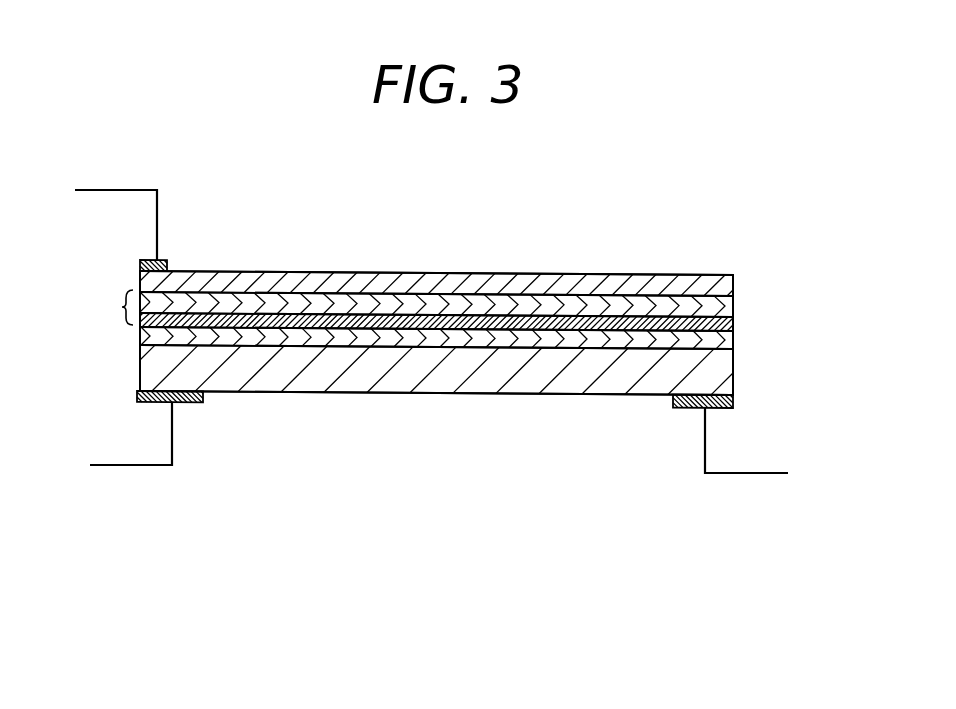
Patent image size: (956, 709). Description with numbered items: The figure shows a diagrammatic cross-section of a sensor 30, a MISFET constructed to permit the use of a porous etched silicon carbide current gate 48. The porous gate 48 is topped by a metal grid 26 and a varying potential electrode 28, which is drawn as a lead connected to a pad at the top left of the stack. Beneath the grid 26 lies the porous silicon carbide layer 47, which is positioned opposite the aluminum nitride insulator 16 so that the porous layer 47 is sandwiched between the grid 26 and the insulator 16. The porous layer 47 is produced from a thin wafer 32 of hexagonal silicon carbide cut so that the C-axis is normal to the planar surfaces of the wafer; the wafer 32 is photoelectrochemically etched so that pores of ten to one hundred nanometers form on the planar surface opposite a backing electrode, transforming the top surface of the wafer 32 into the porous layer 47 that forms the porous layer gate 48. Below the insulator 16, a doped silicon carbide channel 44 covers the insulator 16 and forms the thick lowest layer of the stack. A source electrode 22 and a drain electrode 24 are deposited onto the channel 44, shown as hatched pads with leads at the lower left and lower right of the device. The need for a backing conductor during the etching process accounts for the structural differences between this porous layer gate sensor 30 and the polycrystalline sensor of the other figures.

The sensor 30 is at (736, 228).
The metal grid 26 is at (357, 272).
The porous silicon carbide layer 47 is at (714, 297).
The wafer 32 is at (735, 306).
The aluminum nitride insulator 16 is at (734, 340).
The doped silicon carbide channel 44 is at (712, 370).
The varying potential electrode 28 is at (158, 218).
The source electrode 22 is at (174, 433).
The drain electrode 24 is at (703, 420).
The porous etched silicon carbide current gate 48 is at (118, 302).